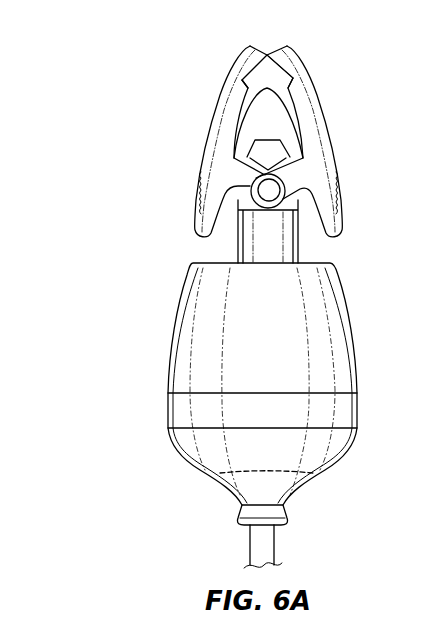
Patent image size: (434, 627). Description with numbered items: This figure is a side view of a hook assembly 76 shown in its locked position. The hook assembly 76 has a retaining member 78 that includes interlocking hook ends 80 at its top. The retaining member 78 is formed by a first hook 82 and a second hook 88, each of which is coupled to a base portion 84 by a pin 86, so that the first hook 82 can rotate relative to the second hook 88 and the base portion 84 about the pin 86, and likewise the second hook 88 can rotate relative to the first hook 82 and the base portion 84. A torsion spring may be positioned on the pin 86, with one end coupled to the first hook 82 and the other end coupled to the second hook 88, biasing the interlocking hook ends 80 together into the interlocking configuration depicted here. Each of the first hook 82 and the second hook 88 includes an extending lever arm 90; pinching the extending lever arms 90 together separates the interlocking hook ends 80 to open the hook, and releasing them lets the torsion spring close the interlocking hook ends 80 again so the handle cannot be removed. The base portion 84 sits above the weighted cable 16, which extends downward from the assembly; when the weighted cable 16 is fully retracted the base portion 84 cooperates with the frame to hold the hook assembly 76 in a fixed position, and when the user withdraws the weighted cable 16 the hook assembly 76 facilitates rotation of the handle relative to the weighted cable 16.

The hook assembly 76 is at (139, 89).
The retaining member 78 is at (267, 50).
The interlocking hook ends 80 is at (242, 97).
The first hook 82 is at (225, 163).
The base portion 84 is at (327, 365).
The pin 86 is at (270, 192).
The second hook 88 is at (300, 168).
The extending lever arm 90 is at (193, 187).
The weighted cable 16 is at (268, 543).